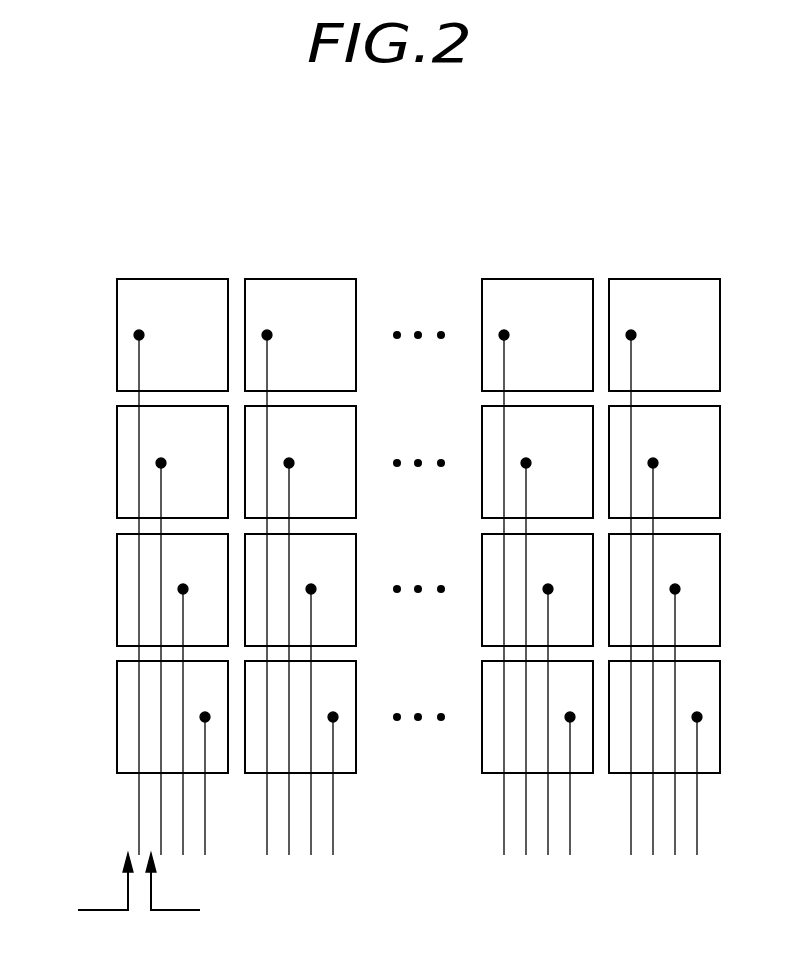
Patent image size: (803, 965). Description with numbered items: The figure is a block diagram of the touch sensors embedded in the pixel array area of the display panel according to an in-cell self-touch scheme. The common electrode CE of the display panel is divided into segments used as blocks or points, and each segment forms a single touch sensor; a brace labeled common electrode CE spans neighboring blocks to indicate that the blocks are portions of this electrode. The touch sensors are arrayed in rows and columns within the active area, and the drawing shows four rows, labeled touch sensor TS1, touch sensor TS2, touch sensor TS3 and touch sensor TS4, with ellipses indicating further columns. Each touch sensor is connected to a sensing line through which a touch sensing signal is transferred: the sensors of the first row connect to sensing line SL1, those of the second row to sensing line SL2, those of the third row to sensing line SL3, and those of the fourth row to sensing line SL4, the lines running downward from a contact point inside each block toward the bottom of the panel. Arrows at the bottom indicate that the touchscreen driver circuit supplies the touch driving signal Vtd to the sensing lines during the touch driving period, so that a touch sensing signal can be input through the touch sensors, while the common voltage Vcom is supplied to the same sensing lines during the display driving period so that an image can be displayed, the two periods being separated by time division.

The common electrode CE is at (172, 279).
The touch sensor TS1 is at (172, 335).
The touch sensor TS2 is at (172, 462).
The touch sensor TS3 is at (172, 590).
The touch sensor TS4 is at (172, 717).
The sensing line SL1 is at (139, 364).
The sensing line SL2 is at (161, 492).
The sensing line SL3 is at (183, 618).
The sensing line SL4 is at (205, 746).
The common voltage Vcom is at (76, 887).
The touch driving signal Vtd is at (193, 887).